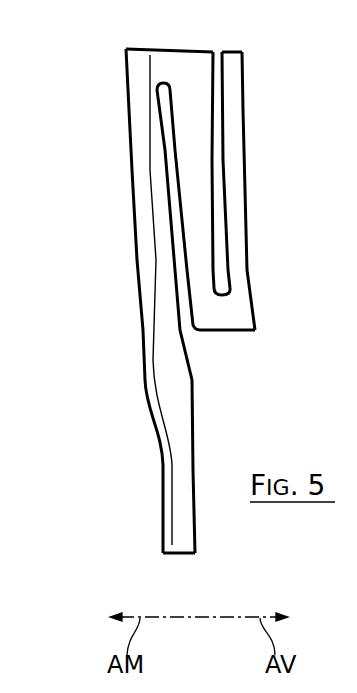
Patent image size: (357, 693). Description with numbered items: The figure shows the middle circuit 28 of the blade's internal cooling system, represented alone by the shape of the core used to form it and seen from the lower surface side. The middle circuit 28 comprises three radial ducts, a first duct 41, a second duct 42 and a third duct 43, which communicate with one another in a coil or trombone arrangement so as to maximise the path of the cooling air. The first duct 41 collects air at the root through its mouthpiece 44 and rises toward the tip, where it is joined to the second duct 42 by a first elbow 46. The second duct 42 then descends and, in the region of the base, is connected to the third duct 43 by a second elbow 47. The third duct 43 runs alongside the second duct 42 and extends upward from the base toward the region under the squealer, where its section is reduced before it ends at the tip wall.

The middle circuit 28 is at (94, 119).
The first duct 41 is at (136, 193).
The second duct 42 is at (192, 131).
The third duct 43 is at (235, 247).
The mouthpiece 44 is at (178, 580).
The first elbow 46 is at (175, 55).
The second elbow 47 is at (230, 320).